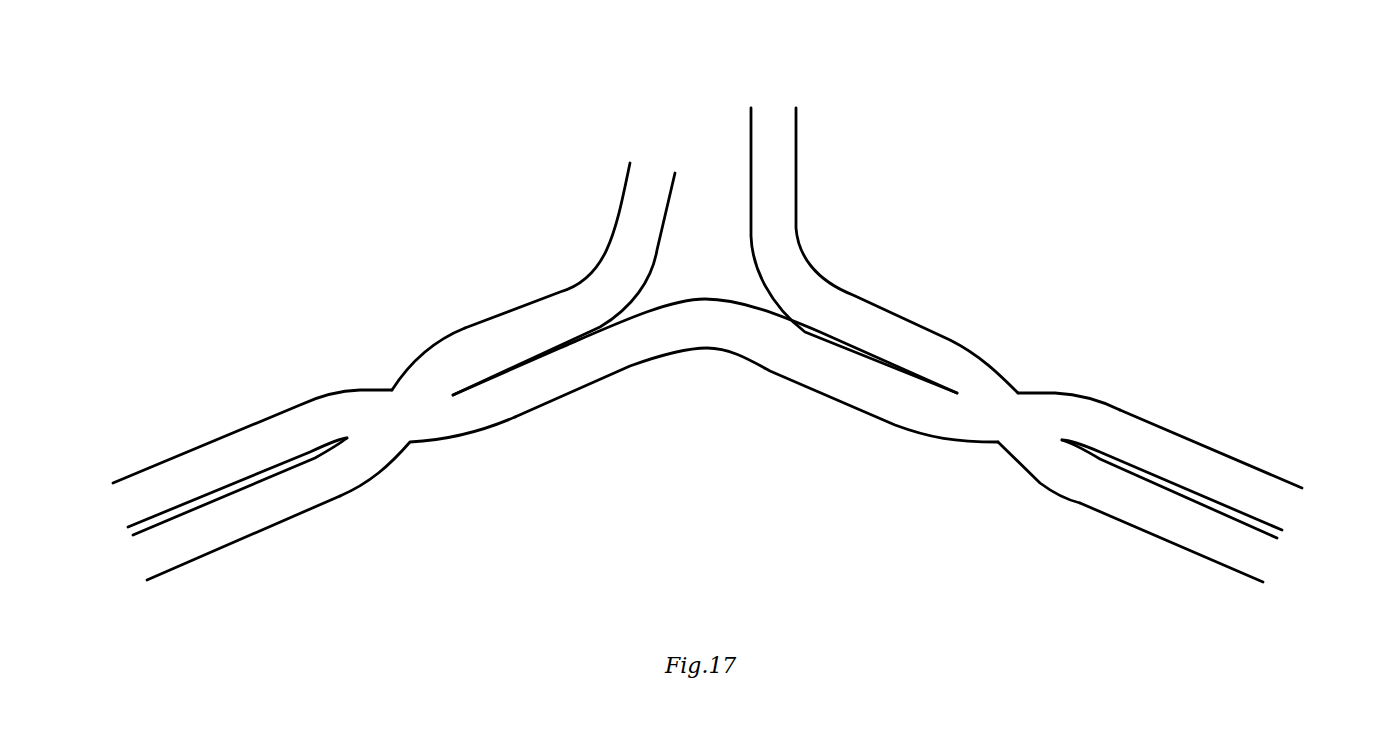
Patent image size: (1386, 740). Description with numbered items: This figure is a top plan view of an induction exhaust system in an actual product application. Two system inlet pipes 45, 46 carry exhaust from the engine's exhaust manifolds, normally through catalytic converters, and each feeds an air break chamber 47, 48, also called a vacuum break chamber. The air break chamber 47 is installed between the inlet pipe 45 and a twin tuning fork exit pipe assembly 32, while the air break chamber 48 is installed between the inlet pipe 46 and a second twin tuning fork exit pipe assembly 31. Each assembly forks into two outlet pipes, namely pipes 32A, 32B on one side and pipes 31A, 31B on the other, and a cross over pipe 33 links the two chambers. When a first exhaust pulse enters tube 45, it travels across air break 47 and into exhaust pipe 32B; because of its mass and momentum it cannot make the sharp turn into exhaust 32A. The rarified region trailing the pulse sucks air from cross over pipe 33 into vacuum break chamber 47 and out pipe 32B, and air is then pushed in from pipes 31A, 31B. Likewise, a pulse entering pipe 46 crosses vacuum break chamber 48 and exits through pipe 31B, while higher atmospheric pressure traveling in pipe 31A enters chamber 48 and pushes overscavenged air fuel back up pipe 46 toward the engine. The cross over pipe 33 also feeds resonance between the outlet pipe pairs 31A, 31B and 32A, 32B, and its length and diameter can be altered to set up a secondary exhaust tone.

The twin tuning fork exit pipe assembly 31 is at (1189, 500).
The tuning fork outlet pipe 31A is at (1182, 470).
The tuning fork outlet pipe 31B is at (1297, 562).
The twin tuning fork exit pipe assembly 32 is at (245, 492).
The tuning fork outlet pipe 32A is at (252, 458).
The tuning fork outlet pipe 32B is at (240, 509).
The cross over pipe 33 is at (682, 360).
The inlet pipe 45 is at (648, 165).
The inlet pipe 46 is at (772, 112).
The air break chamber 47 is at (413, 448).
The air break chamber 48 is at (995, 448).